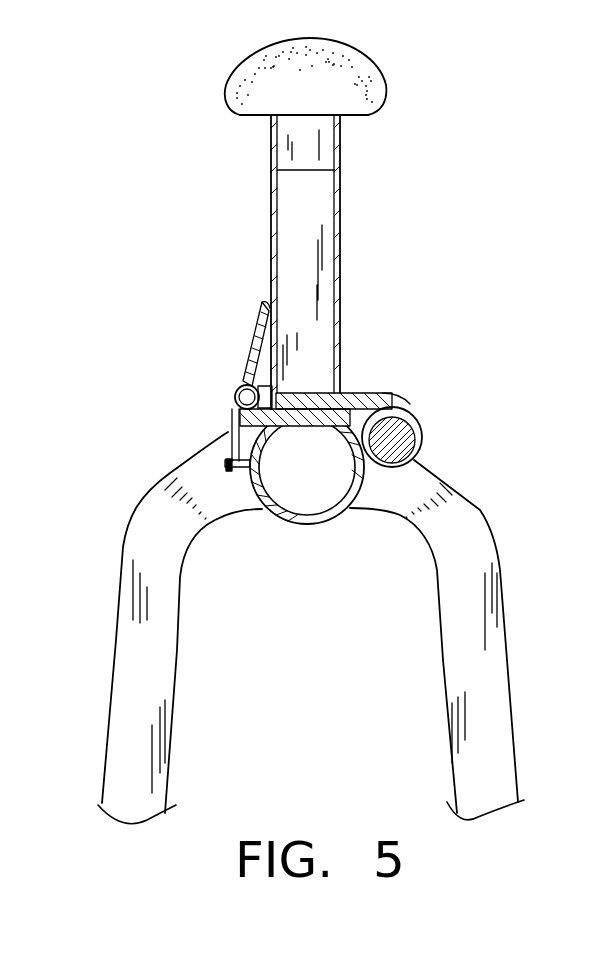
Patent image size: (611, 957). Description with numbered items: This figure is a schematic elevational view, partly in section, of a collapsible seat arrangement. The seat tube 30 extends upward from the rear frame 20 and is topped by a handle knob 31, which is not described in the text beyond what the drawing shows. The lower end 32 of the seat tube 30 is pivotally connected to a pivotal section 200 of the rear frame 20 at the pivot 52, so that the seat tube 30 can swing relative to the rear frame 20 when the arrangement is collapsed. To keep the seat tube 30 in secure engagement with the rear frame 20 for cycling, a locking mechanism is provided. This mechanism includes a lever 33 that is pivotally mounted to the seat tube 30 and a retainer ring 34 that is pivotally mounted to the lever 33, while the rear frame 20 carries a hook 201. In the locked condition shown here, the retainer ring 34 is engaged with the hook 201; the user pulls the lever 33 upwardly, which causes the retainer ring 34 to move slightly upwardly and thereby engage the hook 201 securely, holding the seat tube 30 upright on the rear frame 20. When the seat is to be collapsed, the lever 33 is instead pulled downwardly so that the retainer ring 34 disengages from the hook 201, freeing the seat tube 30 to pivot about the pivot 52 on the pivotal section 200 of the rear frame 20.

The rear frame 20 is at (462, 517).
The pivotal section 200 is at (330, 426).
The hook 201 is at (226, 466).
The seat tube 30 is at (340, 298).
The handle knob 31 is at (330, 90).
The lower end 32 is at (393, 395).
The lever 33 is at (254, 345).
The retainer ring 34 is at (228, 435).
The pivot connection 52 is at (417, 425).